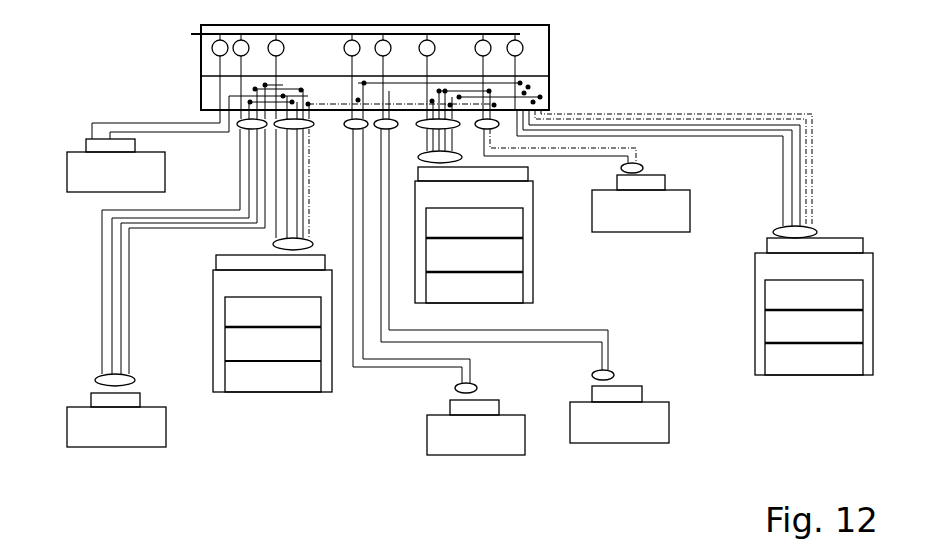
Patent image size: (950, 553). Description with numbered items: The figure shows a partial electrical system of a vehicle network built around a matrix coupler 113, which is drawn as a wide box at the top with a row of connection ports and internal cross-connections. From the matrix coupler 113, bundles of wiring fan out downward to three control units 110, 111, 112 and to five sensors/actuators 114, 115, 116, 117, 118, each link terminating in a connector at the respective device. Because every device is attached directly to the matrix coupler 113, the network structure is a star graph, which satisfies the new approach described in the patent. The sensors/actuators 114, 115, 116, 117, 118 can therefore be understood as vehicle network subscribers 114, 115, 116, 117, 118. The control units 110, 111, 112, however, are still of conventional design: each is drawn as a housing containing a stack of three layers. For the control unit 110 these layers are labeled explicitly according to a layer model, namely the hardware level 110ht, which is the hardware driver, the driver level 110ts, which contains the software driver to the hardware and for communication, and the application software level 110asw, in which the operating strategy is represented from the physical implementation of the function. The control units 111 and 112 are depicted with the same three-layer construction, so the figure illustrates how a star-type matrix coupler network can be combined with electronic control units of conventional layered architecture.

The control unit 110 is at (873, 279).
The application software level 110asw is at (762, 290).
The driver level 110ts is at (762, 322).
The hardware level 110ht is at (765, 347).
The control unit 111 is at (525, 263).
The control unit 112 is at (272, 373).
The matrix coupler 113 is at (547, 108).
The sensor/actuator 114 is at (726, 173).
The sensor/actuator 115 is at (463, 442).
The sensor/actuator 116 is at (608, 433).
The sensor/actuator 117 is at (137, 436).
The sensor/actuator 118 is at (65, 182).